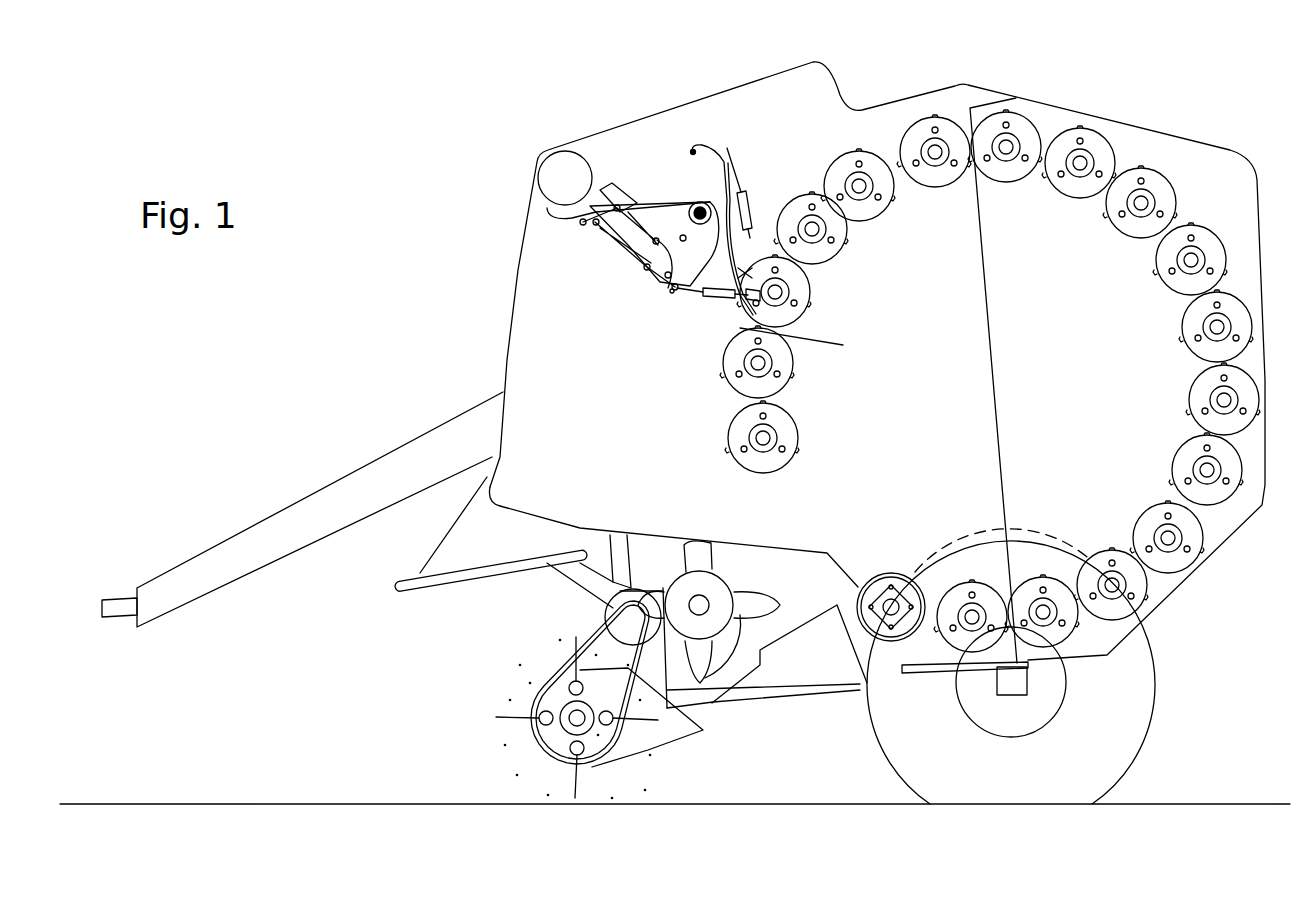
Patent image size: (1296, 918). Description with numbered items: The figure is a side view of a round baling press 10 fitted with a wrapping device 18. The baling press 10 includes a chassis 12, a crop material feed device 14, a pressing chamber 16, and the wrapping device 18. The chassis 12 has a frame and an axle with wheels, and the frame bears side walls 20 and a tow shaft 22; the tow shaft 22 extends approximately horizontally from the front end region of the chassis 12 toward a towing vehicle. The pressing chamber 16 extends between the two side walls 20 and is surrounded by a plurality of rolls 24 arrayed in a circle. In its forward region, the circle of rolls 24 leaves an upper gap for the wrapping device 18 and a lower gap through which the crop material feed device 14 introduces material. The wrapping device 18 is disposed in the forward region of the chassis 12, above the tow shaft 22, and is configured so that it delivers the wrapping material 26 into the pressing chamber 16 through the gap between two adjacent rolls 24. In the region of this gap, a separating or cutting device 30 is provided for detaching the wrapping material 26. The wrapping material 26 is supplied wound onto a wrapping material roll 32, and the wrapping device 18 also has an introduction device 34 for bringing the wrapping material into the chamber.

The baling press 10 is at (398, 97).
The chassis 12 is at (1013, 680).
The crop material feed device 14 is at (414, 677).
The pressing chamber 16 is at (1035, 360).
The wrapping device 18 is at (609, 104).
The side walls 20 is at (607, 475).
The tow shaft 22 is at (278, 505).
The rolls 24 is at (1103, 152).
The wrapping material 26 is at (826, 345).
The separating or cutting device 30 is at (751, 246).
The wrapping material roll 32 is at (536, 190).
The introduction device 34 is at (651, 140).